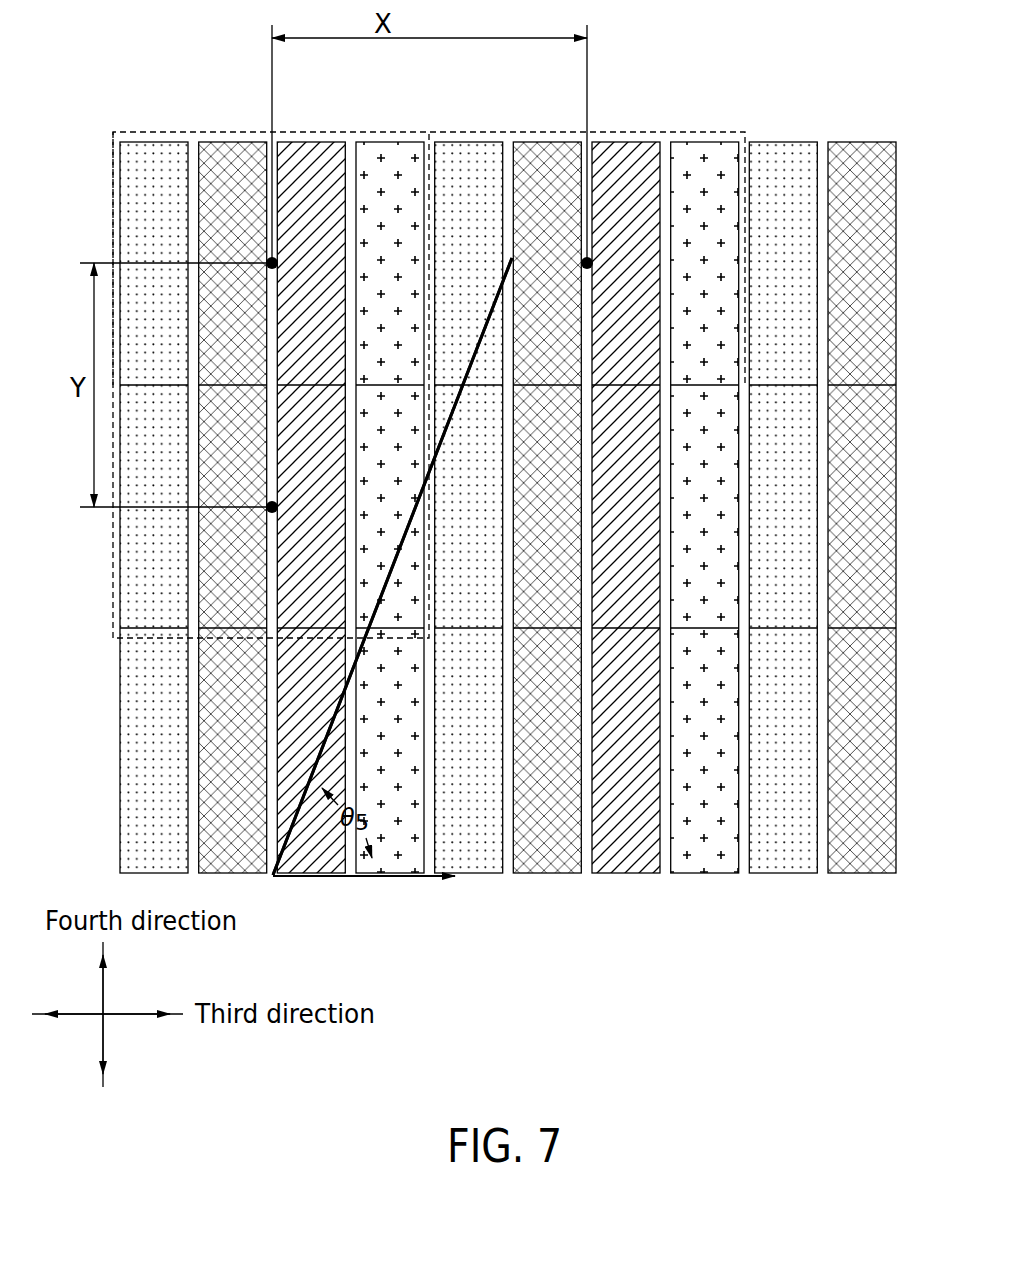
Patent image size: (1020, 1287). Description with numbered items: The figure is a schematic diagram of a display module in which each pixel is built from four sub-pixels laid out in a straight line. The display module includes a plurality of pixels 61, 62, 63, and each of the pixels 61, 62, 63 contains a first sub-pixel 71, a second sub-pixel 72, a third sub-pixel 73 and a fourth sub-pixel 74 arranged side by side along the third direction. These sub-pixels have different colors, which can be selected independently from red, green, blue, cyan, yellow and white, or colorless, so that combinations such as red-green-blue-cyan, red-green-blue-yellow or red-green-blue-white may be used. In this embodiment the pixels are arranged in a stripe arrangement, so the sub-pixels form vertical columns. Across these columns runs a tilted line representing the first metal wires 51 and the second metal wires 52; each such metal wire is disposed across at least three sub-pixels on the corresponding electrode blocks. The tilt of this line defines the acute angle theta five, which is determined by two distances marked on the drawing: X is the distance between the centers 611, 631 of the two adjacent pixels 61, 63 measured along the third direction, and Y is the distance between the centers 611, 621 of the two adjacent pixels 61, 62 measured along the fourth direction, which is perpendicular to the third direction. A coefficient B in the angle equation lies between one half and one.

The first metal wire 51 is at (512, 258).
The second metal wire 52 is at (512, 258).
The pixel 61 is at (158, 132).
The center of pixel 61 611 is at (270, 263).
The pixel 62 is at (113, 597).
The center of pixel 62 621 is at (270, 507).
The pixel 63 is at (738, 132).
The center of pixel 63 631 is at (590, 263).
The first sub-pixel 71 is at (474, 142).
The second sub-pixel 72 is at (525, 142).
The third sub-pixel 73 is at (607, 142).
The fourth sub-pixel 74 is at (404, 142).